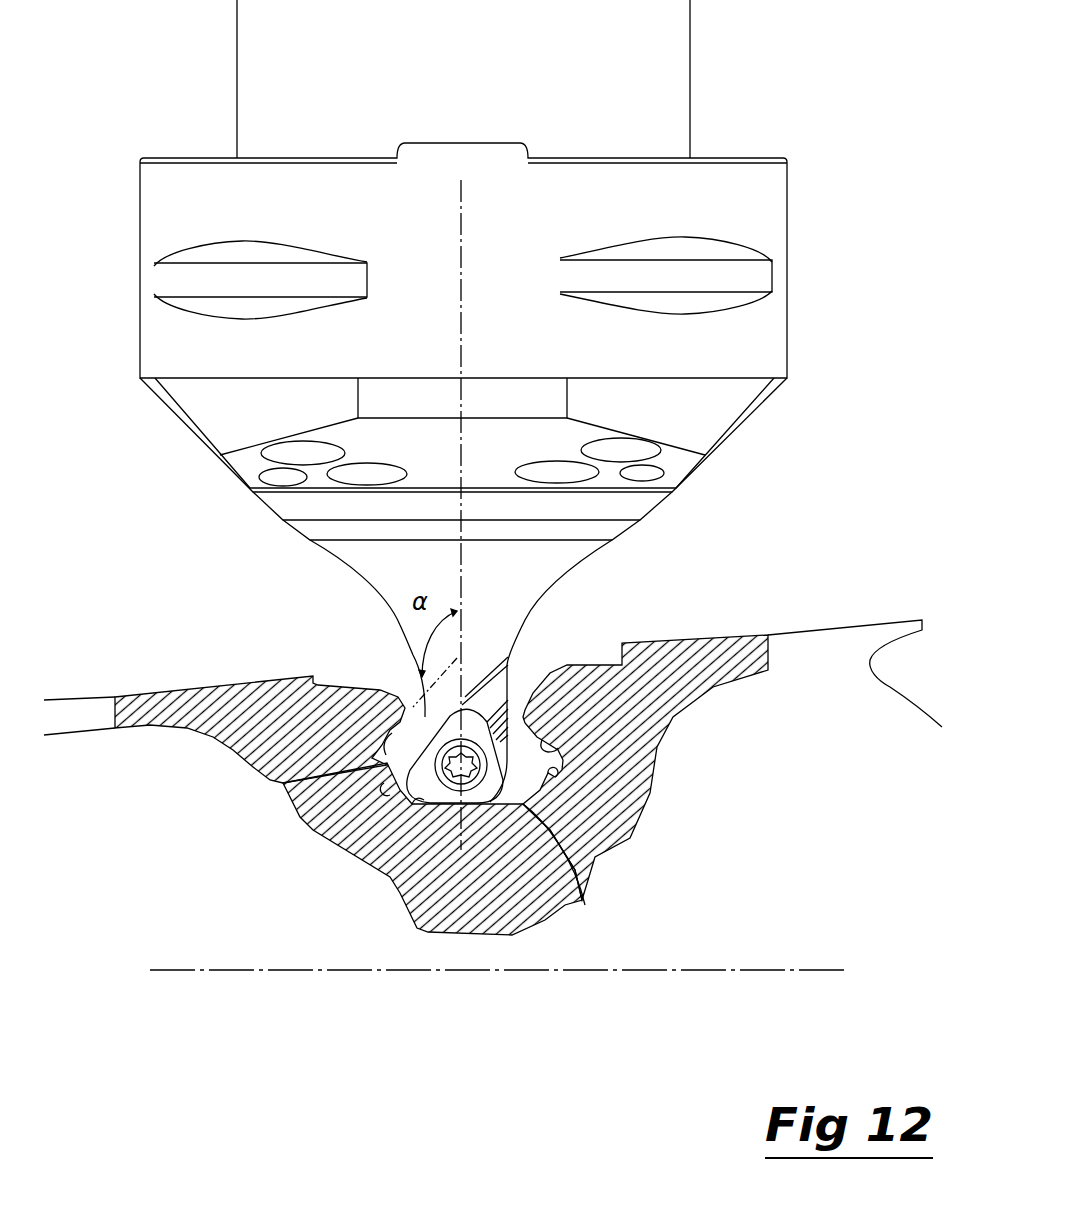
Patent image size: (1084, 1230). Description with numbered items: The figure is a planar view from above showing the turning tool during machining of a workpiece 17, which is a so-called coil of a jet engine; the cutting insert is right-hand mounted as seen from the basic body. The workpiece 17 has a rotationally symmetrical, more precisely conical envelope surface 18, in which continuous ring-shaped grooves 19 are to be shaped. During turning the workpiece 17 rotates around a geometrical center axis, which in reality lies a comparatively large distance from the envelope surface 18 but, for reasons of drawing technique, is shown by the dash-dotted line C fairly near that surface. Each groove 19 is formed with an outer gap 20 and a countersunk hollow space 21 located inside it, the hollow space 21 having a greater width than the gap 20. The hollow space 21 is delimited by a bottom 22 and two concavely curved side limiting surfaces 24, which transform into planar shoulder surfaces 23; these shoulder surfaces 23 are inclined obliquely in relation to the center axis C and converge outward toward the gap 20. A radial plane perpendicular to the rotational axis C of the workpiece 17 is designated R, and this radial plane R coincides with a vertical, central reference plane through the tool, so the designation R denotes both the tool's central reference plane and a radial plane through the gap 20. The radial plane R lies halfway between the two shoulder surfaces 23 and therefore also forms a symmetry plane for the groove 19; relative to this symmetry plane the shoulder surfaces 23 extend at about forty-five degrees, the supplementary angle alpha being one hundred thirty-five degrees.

The workpiece 17 is at (268, 700).
The envelope surface 18 is at (780, 632).
The groove 19 is at (584, 900).
The gap 20 is at (417, 692).
The hollow space 21 is at (527, 770).
The bottom 22 is at (410, 812).
The shoulder surface 23 is at (283, 783).
The side limiting surface 24 is at (318, 840).
The radial plane R is at (463, 271).
The center axis C is at (778, 970).